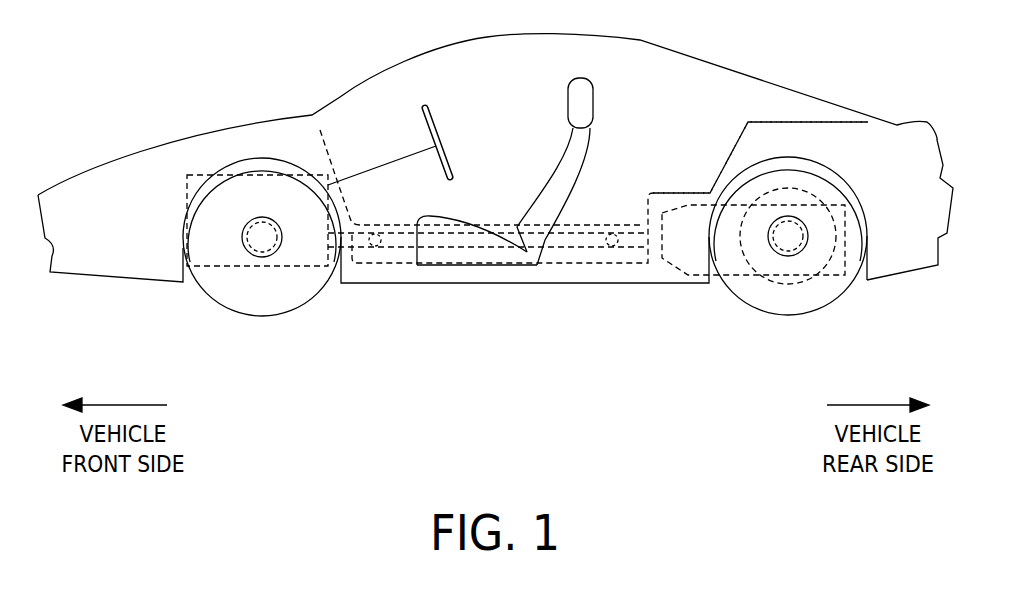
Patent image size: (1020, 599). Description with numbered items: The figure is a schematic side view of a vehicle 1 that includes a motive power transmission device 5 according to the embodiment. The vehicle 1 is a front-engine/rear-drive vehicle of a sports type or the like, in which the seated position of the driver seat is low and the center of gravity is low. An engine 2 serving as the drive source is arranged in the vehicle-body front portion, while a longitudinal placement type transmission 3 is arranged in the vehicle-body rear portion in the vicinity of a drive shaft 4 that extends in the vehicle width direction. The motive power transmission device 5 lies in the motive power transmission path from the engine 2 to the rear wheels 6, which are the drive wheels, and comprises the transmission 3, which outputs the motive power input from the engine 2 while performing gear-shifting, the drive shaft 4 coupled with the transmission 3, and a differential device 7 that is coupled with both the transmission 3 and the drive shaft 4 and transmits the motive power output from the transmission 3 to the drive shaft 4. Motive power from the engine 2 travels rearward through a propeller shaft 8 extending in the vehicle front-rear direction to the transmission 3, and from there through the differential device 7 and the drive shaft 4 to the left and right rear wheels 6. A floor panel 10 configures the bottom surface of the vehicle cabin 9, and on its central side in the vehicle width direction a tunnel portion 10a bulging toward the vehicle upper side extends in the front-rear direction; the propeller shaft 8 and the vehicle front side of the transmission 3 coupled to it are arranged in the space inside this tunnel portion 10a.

The vehicle 1 is at (212, 62).
The engine 2 is at (217, 268).
The transmission 3 is at (685, 277).
The drive shaft 4 is at (777, 254).
The motive power transmission device 5 is at (666, 272).
The rear wheels 6 is at (838, 298).
The differential device 7 is at (802, 286).
The propeller shaft 8 is at (473, 250).
The vehicle cabin 9 is at (503, 148).
The floor panel 10 is at (388, 266).
The tunnel portion 10a is at (587, 226).